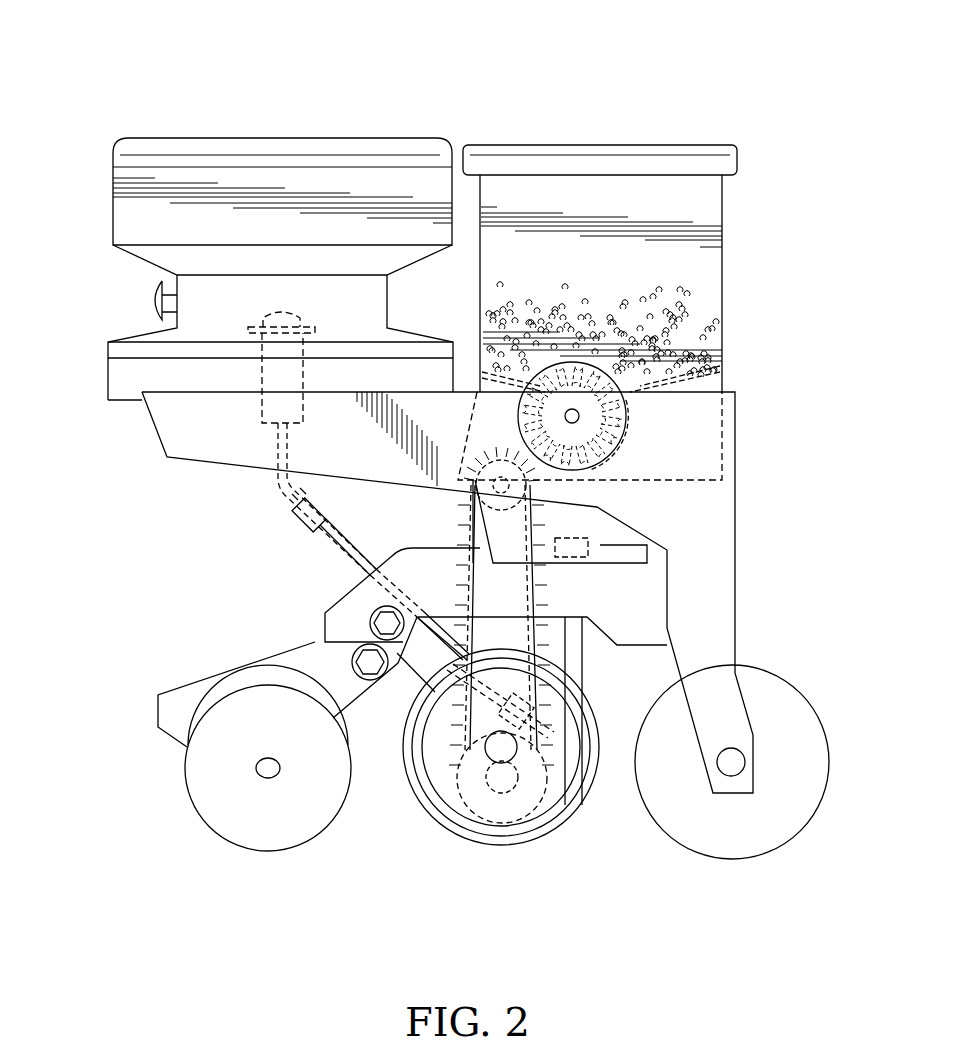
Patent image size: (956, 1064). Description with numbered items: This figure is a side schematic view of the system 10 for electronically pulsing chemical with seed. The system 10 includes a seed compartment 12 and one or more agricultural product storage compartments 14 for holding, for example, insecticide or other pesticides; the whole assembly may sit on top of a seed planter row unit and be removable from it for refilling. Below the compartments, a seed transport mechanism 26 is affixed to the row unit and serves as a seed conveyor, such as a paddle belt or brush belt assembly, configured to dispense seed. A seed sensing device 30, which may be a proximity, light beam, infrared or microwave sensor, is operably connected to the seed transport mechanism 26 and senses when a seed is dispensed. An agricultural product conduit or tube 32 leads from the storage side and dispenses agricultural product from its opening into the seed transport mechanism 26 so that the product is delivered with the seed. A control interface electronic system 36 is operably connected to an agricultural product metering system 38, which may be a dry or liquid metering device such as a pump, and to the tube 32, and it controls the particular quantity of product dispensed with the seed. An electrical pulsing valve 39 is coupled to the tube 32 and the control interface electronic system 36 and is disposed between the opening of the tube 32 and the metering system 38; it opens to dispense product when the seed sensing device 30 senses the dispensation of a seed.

The system for electronically pulsing chemical with seed 10 is at (712, 86).
The seed compartment 12 is at (601, 145).
The agricultural product storage compartment 14 is at (238, 140).
The seed transport mechanism 26 is at (547, 808).
The seed sensing device 30 is at (588, 548).
The agricultural product conduit 32 is at (277, 440).
The control interface electronic system 36 is at (296, 517).
The agricultural product metering system 38 is at (252, 373).
The electrical pulsing valve 39 is at (522, 712).